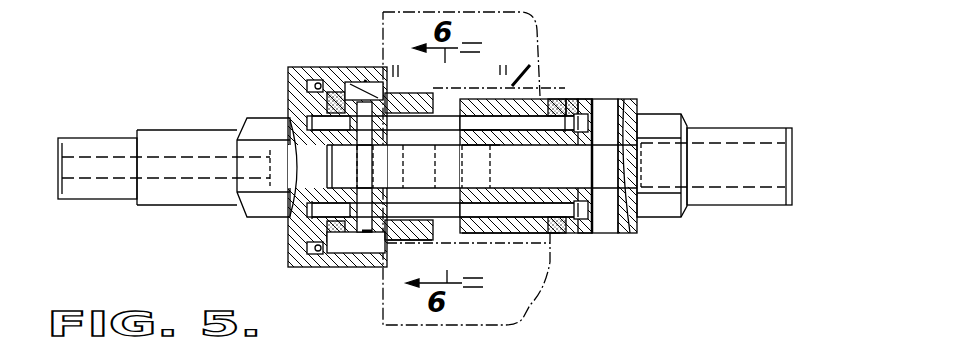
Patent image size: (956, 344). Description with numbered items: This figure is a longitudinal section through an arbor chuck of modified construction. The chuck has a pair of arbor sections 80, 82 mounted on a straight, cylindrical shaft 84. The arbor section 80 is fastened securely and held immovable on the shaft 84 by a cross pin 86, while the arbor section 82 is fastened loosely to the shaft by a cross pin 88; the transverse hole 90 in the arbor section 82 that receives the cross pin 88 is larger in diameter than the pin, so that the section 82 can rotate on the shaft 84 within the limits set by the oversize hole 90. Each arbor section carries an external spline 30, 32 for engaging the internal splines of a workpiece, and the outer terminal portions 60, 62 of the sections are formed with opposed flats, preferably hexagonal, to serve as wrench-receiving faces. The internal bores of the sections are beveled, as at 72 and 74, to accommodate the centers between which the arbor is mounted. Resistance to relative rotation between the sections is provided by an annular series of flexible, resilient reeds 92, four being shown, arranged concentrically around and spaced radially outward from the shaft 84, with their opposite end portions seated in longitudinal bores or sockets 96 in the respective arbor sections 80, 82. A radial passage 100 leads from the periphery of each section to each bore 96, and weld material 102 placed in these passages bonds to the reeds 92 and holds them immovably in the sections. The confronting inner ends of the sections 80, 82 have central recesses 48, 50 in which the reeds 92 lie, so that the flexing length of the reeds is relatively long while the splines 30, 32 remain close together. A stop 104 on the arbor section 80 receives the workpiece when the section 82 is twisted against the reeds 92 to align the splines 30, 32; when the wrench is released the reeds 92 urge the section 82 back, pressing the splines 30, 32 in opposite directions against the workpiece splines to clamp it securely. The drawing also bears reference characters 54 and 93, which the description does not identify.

The external spline 30 is at (421, 95).
The external spline 32 is at (474, 99).
The central recess 48 is at (430, 121).
The central recess 50 is at (470, 124).
The housing section 54 is at (538, 300).
The terminal portion 60 is at (249, 120).
The terminal portion 62 is at (682, 114).
The beveled bore 72 is at (60, 200).
The beveled bore 74 is at (796, 140).
The arbor section 80 is at (395, 232).
The arbor section 82 is at (505, 234).
The shaft 84 is at (482, 166).
The cross pin 86 is at (372, 242).
The cross pin 88 is at (624, 98).
The transverse hole 90 is at (667, 118).
The reed 92 is at (522, 118).
The shoulder 93 is at (286, 197).
The longitudinal bore 96 is at (390, 110).
The radial passage 100 is at (338, 97).
The weld material 102 is at (370, 84).
The stop 104 is at (315, 64).